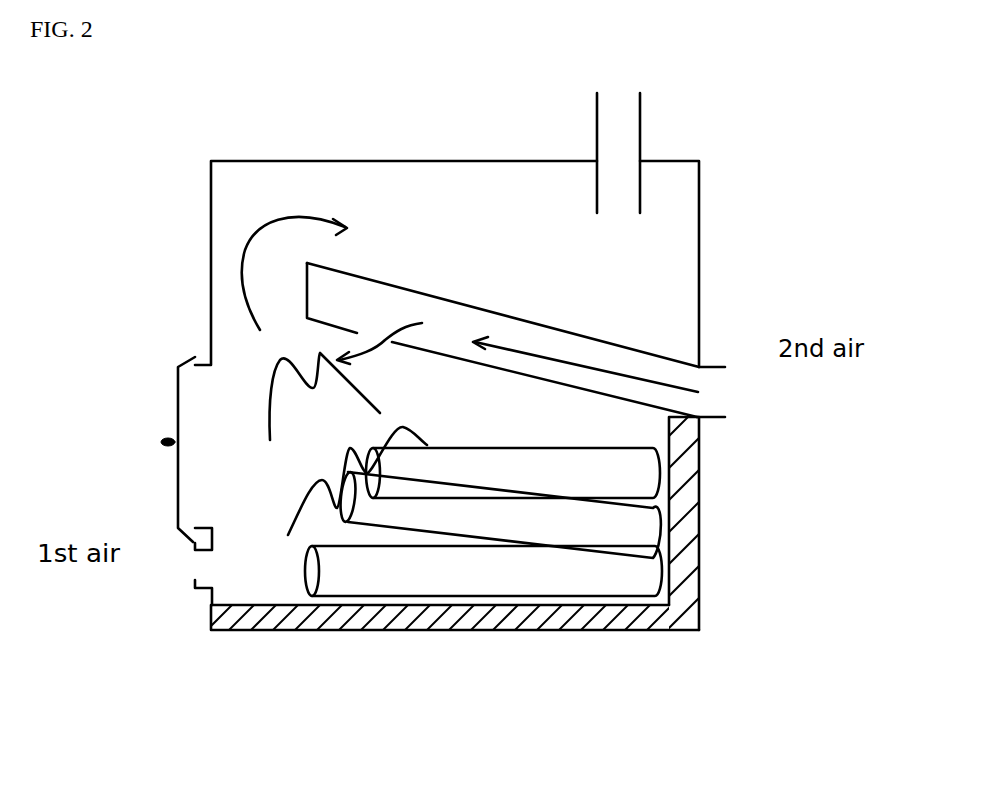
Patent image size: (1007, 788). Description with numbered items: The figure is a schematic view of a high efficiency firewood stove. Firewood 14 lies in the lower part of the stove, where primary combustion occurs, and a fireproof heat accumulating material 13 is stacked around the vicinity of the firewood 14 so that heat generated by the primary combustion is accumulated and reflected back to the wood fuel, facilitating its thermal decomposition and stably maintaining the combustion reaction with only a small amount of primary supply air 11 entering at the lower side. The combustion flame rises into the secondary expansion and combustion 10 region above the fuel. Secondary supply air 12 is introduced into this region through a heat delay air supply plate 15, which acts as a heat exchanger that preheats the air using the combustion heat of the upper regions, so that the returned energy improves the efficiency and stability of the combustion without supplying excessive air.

The secondary expansion and combustion 10 is at (220, 313).
The primary supply air 11 is at (187, 598).
The secondary supply air 12 is at (732, 402).
The fireproof heat accumulating material 13 is at (690, 557).
The firewood 14 is at (482, 578).
The heat delay air supply plate 15 is at (548, 325).